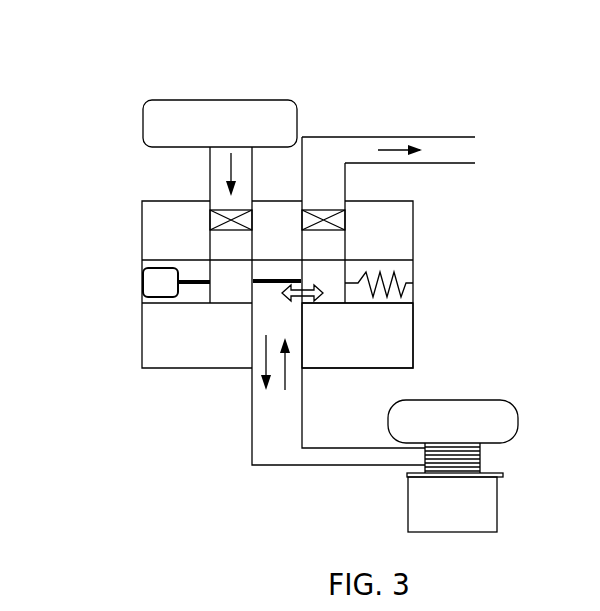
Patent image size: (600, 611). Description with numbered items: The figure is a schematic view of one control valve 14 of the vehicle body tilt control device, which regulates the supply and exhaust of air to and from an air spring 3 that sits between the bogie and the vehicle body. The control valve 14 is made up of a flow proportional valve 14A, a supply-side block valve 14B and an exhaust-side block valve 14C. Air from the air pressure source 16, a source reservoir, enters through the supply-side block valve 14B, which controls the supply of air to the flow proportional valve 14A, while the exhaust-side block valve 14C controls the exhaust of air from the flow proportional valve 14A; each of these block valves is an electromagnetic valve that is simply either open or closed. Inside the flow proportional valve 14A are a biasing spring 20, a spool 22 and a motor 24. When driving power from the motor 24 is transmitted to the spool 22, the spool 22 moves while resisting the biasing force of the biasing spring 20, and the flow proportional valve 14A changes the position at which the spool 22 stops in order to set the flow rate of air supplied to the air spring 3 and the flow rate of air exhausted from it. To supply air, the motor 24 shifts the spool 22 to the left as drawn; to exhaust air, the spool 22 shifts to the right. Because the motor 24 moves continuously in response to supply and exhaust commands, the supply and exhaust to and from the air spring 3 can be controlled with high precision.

The air spring 3 is at (518, 423).
The control valve 14 is at (131, 372).
The flow proportional valve 14A is at (433, 303).
The supply-side block valve 14B is at (221, 209).
The exhaust-side block valve 14C is at (323, 208).
The air pressure source 16 is at (283, 98).
The biasing spring 20 is at (403, 277).
The spool 22 is at (333, 297).
The motor 24 is at (142, 283).